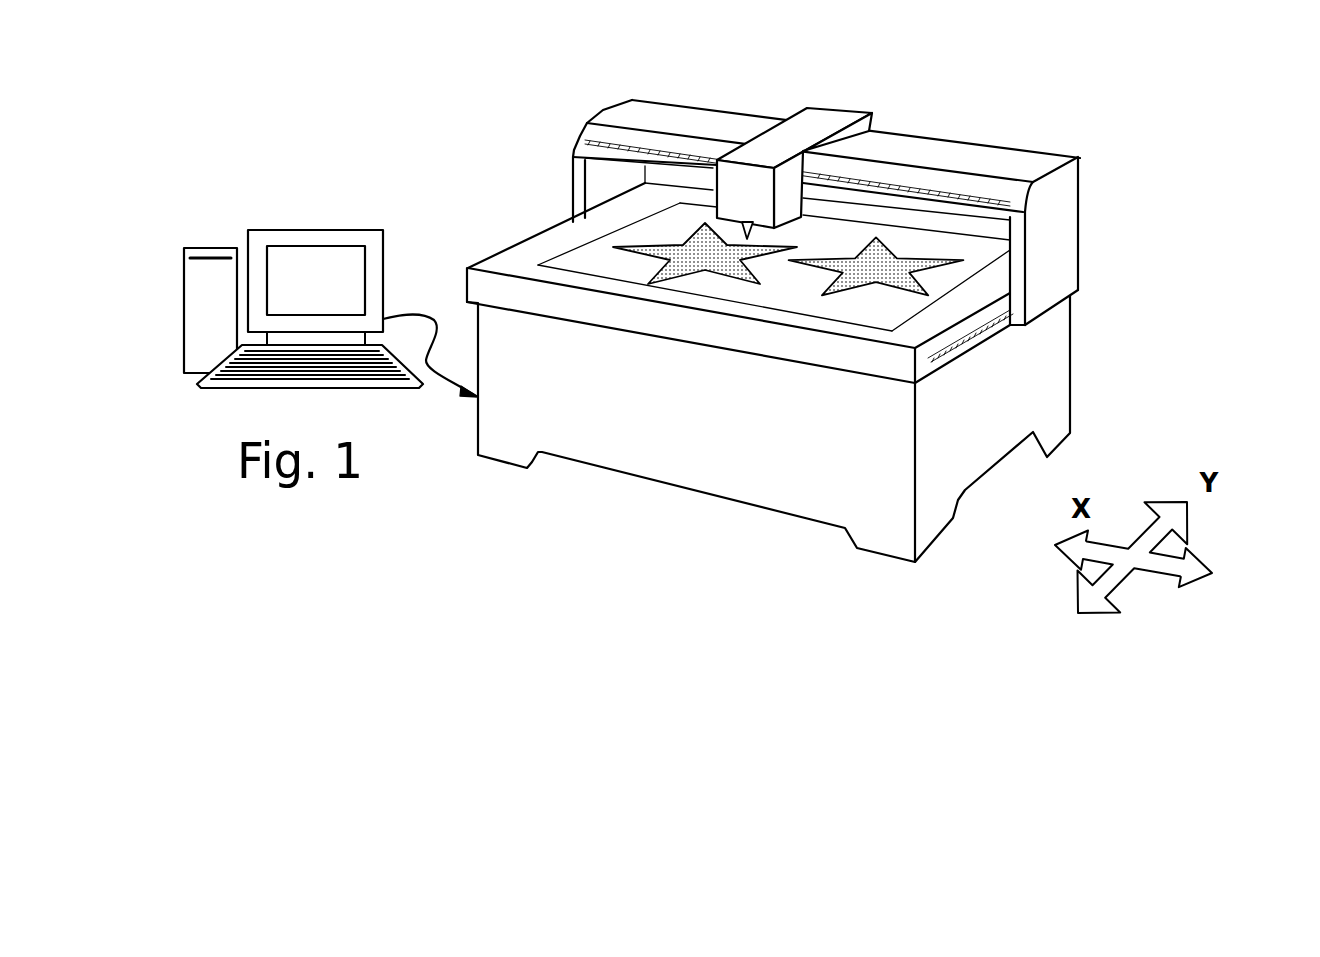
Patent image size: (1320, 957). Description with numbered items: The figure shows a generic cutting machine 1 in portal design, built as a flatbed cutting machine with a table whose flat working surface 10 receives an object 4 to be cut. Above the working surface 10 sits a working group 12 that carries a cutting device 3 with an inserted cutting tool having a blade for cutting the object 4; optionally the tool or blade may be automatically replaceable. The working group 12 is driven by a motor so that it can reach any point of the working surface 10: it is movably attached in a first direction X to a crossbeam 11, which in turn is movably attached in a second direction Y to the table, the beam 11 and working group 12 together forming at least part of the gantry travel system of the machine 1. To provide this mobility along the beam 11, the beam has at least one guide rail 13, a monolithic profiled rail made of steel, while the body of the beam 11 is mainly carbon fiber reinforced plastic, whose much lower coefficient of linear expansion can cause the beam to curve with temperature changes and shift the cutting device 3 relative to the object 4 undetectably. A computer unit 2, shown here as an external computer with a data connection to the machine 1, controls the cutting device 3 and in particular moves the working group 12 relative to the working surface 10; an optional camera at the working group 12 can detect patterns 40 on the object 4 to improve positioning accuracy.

The cutting machine 1 is at (800, 281).
The computer unit 2 is at (331, 280).
The cutting device 3 is at (876, 372).
The object 4 is at (845, 274).
The working surface 10 is at (763, 360).
The crossbeam 11 is at (826, 162).
The working group 12 is at (864, 275).
The guide rail 13 is at (816, 142).
The patterns 40 is at (737, 371).